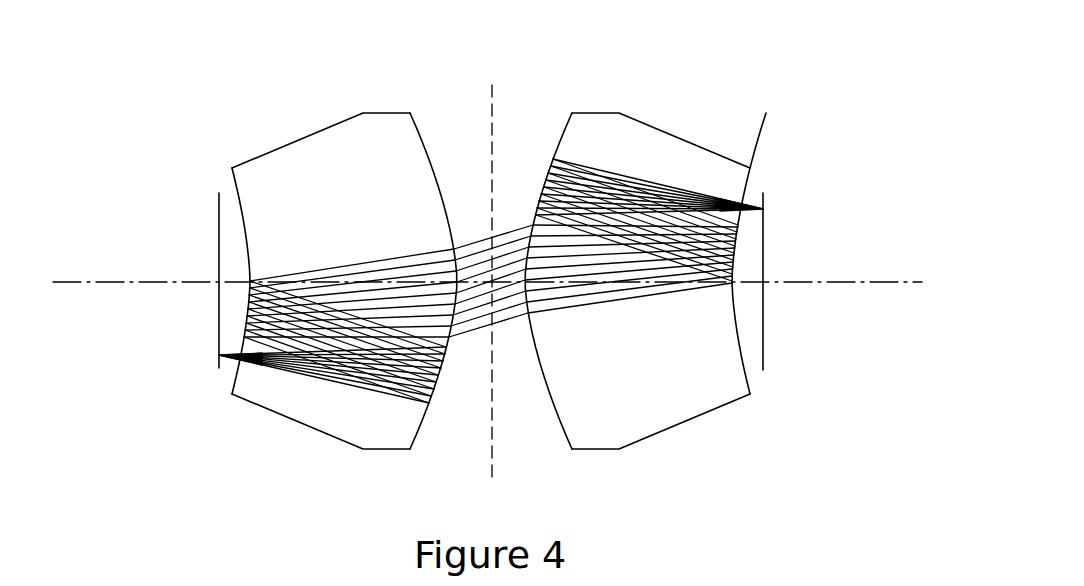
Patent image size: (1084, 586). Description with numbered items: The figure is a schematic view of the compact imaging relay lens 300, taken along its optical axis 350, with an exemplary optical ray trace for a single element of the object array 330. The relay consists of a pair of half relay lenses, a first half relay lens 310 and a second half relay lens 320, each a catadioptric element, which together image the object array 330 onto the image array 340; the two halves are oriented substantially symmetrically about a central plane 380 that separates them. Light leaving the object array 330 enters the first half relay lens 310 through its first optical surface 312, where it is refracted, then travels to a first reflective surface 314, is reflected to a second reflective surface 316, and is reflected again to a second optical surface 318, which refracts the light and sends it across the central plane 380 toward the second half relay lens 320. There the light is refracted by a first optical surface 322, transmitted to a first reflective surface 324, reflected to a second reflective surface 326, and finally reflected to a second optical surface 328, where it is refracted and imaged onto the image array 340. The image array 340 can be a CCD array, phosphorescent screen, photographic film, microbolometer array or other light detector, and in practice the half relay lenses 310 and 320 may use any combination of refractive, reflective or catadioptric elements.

The compact imaging relay lens 300 is at (176, 71).
The first half relay lens 310 is at (309, 311).
The first optical surface 312 is at (222, 364).
The first reflective surface 314 is at (440, 390).
The second reflective surface 316 is at (247, 314).
The second optical surface 318 is at (450, 230).
The second half relay lens 320 is at (675, 310).
The first optical surface 322 is at (527, 338).
The first reflective surface 324 is at (738, 258).
The second reflective surface 326 is at (545, 177).
The second optical surface 328 is at (765, 207).
The object array 330 is at (218, 233).
The image array 340 is at (763, 330).
The optical axis 350 is at (62, 283).
The central plane 380 is at (492, 103).